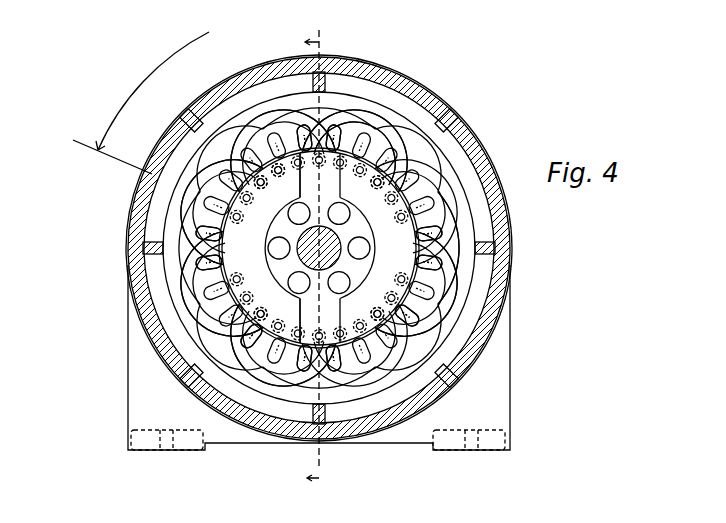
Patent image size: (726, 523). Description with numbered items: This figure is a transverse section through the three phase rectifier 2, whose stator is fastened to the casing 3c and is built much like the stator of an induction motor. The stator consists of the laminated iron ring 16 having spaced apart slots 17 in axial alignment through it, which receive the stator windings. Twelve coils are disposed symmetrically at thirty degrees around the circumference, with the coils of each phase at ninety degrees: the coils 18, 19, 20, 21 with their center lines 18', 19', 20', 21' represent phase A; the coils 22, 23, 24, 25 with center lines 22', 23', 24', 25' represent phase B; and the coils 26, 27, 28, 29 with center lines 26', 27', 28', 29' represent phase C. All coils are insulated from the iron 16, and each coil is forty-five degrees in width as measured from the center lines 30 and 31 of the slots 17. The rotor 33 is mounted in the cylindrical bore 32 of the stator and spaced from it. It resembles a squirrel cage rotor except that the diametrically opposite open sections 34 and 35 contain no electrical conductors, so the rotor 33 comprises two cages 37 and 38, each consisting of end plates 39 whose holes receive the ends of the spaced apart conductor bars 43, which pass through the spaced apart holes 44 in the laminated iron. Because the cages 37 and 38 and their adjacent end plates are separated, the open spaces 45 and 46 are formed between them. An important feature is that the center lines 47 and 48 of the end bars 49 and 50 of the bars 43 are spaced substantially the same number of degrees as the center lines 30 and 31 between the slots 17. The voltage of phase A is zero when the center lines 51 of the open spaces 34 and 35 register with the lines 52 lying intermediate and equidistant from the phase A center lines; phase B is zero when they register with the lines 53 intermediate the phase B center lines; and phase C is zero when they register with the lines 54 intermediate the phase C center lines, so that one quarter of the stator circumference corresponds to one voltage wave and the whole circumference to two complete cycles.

The three phase rectifier 2 is at (580, 369).
The casing 3c is at (440, 97).
The laminated iron ring 16 is at (487, 152).
The slots 17 is at (398, 140).
The coil 18 is at (290, 248).
The center line 18' is at (179, 106).
The coil 19 is at (363, 250).
The center line 19' is at (333, 238).
The coil 20 is at (340, 357).
The center line 20' is at (461, 388).
The coil 21 is at (139, 395).
The center line 21' is at (193, 369).
The coil 22 is at (372, 95).
The center line 22' is at (361, 103).
The coil 23 is at (484, 275).
The center line 23' is at (465, 291).
The coil 24 is at (275, 392).
The center line 24' is at (283, 413).
The coil 25 is at (154, 228).
The center line 25' is at (177, 204).
The coil 26 is at (353, 101).
The center line 26' is at (281, 87).
The coil 27 is at (493, 248).
The center line 27' is at (480, 215).
The coil 28 is at (407, 388).
The center line 28' is at (356, 409).
The coil 29 is at (175, 291).
The center line 29' is at (153, 282).
The center line of slots 30 is at (131, 103).
The center line of slots 31 is at (293, 108).
The cylindrical bore 32 is at (248, 327).
The rotor 33 is at (452, 312).
The open section 34 is at (320, 175).
The open section 35 is at (319, 321).
The cage 37 is at (296, 276).
The cage 38 is at (364, 272).
The end plates 39 is at (343, 226).
The conductor bars 43 is at (403, 266).
The holes 44 is at (279, 190).
The open space 45 is at (321, 200).
The open space 46 is at (315, 300).
The center line 47 is at (285, 300).
The center line 48 is at (352, 302).
The end bar 49 is at (290, 320).
The end bar 50 is at (349, 324).
The center lines of open spaces 51 is at (326, 292).
The lines 52 is at (313, 414).
The lines 53 is at (310, 336).
The lines 54 is at (424, 306).